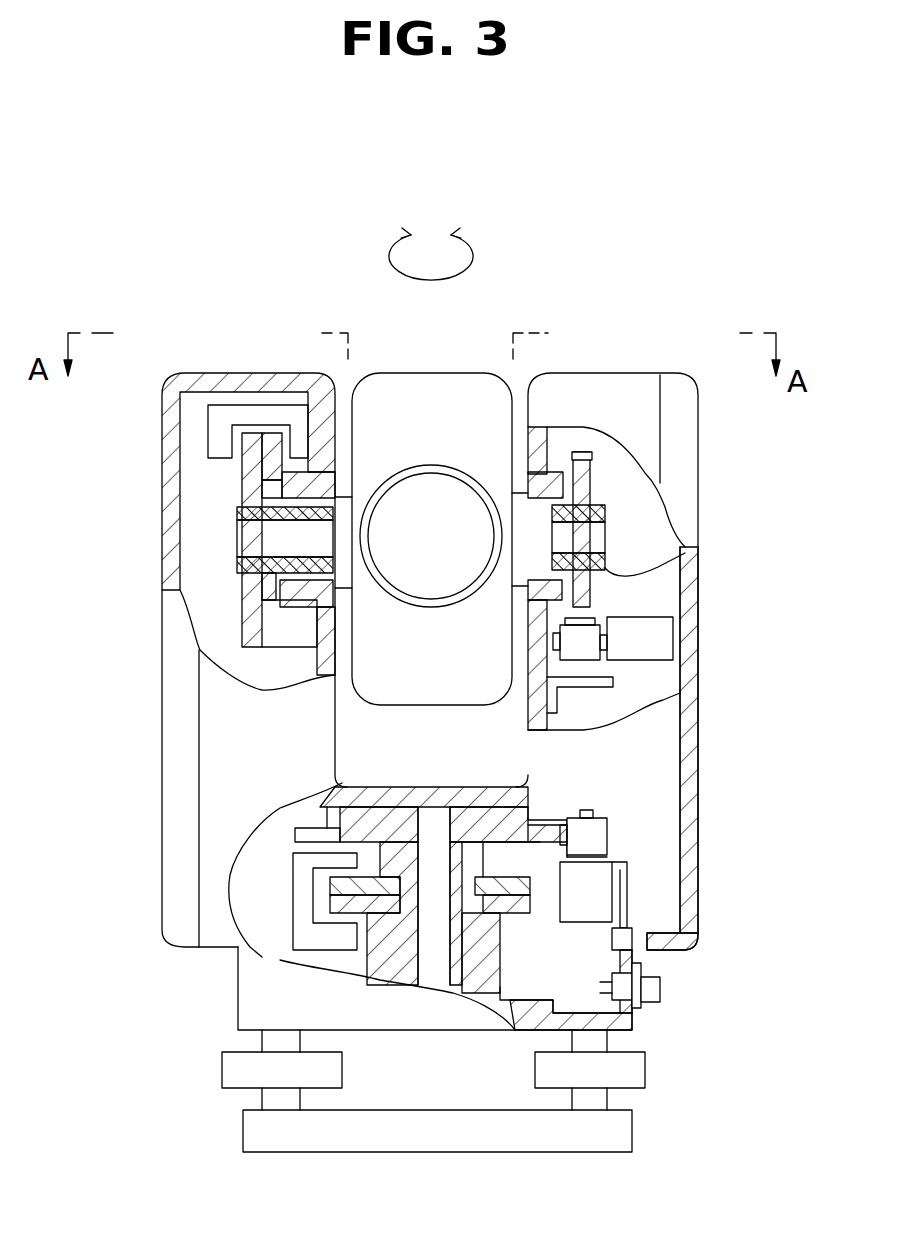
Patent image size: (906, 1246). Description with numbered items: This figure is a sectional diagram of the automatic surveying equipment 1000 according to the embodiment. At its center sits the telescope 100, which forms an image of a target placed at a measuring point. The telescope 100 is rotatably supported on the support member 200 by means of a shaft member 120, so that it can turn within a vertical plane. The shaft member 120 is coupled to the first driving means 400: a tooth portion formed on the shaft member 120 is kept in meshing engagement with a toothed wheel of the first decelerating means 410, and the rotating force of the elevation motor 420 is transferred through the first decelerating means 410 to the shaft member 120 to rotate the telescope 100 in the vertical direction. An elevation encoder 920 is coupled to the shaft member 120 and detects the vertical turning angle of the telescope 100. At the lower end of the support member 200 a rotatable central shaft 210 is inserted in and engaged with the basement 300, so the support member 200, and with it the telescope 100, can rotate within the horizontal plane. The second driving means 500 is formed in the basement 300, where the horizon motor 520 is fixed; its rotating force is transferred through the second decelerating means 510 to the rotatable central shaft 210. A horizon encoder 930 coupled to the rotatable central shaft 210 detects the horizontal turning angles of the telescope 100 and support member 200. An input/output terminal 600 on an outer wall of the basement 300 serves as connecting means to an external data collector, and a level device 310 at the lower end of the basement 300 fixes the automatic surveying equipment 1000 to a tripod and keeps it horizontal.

The telescope 100 is at (456, 395).
The shaft member 120 is at (238, 565).
The support member 200 is at (628, 392).
The rotatable central shaft 210 is at (343, 799).
The basement 300 is at (262, 1002).
The level device 310 is at (660, 1058).
The first driving means 400 is at (636, 598).
The first decelerating means 410 is at (596, 608).
The elevation motor 420 is at (655, 645).
The second driving means 500 is at (572, 796).
The second decelerating means 510 is at (590, 838).
The horizon motor 520 is at (595, 903).
The input/output terminal 600 is at (660, 998).
The elevation encoder 920 is at (242, 474).
The horizon encoder 930 is at (330, 886).
The automatic surveying equipment 1000 is at (762, 1188).